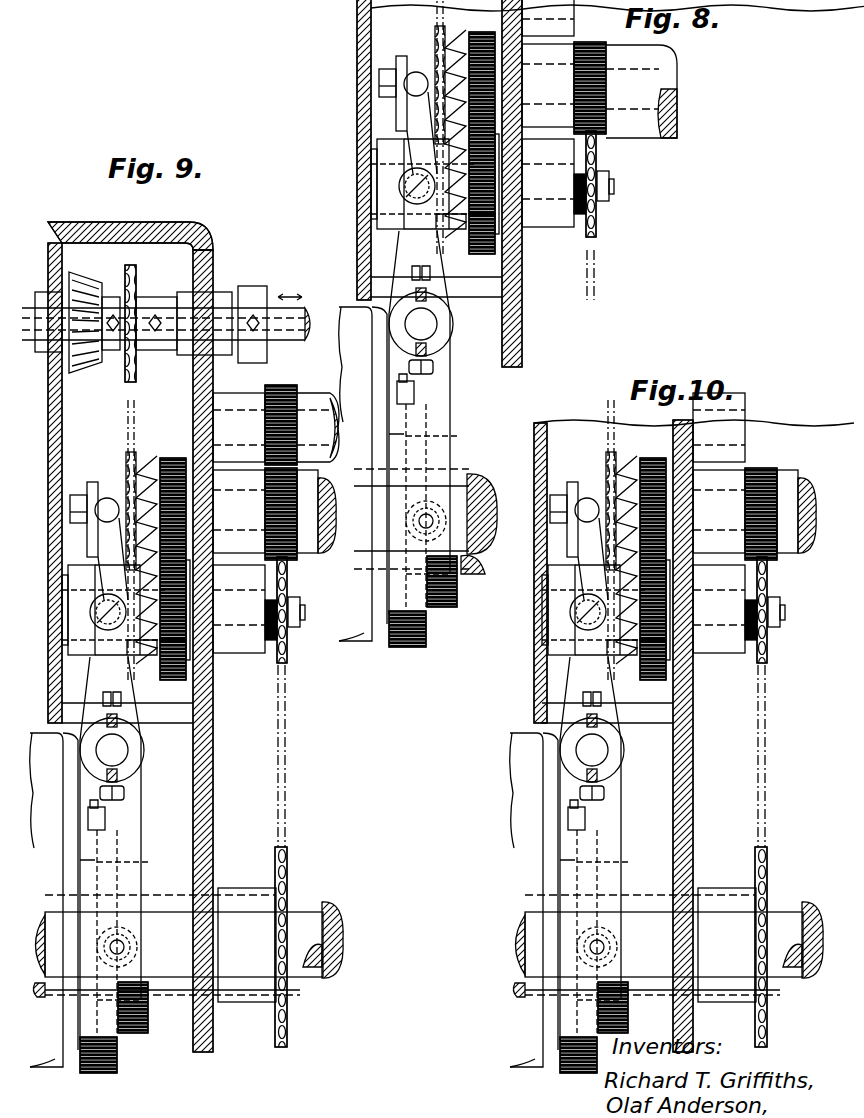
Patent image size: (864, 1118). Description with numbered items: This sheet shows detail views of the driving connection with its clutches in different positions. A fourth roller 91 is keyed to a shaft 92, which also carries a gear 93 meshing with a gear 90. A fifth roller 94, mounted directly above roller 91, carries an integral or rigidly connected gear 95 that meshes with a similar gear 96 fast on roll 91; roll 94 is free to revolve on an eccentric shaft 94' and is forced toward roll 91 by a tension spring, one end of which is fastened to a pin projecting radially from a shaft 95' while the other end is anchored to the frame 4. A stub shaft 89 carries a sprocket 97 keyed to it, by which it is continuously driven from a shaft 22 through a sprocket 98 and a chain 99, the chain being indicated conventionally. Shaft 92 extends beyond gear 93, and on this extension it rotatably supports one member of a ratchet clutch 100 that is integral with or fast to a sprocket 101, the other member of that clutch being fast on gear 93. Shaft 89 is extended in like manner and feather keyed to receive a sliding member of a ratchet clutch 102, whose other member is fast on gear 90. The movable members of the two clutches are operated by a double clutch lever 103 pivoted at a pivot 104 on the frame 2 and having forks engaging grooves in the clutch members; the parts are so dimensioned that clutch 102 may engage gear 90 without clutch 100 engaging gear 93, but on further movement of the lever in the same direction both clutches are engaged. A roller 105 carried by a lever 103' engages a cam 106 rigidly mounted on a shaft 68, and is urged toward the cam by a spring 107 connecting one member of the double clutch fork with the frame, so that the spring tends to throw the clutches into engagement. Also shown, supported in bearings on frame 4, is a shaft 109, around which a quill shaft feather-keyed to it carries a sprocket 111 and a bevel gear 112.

In FIG. 9, the frame 2 is at (68, 806).
In FIG. 8, the frame 2 is at (357, 461).
In FIG. 10, the frame 2 is at (534, 900).
In FIG. 9, the frame 4 is at (212, 790).
In FIG. 8, the frame 4 is at (451, 183).
In FIG. 10, the frame 4 is at (627, 736).
In FIG. 9, the shaft 22 is at (308, 956).
In FIG. 8, the shaft 22 is at (425, 505).
In FIG. 10, the shaft 22 is at (658, 923).
In FIG. 9, the shaft 68 is at (342, 915).
In FIG. 8, the shaft 68 is at (487, 575).
In FIG. 10, the shaft 68 is at (800, 926).
In FIG. 9, the stub shaft 89 is at (300, 615).
In FIG. 8, the stub shaft 89 is at (621, 193).
In FIG. 10, the stub shaft 89 is at (789, 614).
In FIG. 9, the gear 90 is at (186, 668).
In FIG. 8, the gear 90 is at (526, 200).
In FIG. 10, the gear 90 is at (698, 629).
In FIG. 9, the fourth roller 91 is at (312, 500).
In FIG. 8, the fourth roller 91 is at (641, 91).
In FIG. 10, the fourth roller 91 is at (796, 511).
In FIG. 9, the shaft 92 is at (75, 495).
In FIG. 8, the shaft 92 is at (519, 88).
In FIG. 10, the shaft 92 is at (574, 492).
In FIG. 9, the gear 93 is at (170, 455).
In FIG. 8, the gear 93 is at (512, 122).
In FIG. 10, the gear 93 is at (684, 543).
In FIG. 9, the fifth roller 94 is at (318, 415).
In FIG. 9, the eccentric shaft 94' is at (271, 523).
In FIG. 8, the eccentric shaft 94' is at (548, 113).
In FIG. 10, the eccentric shaft 94' is at (719, 523).
In FIG. 9, the gear 95 is at (281, 416).
In FIG. 9, the shaft 95' is at (242, 393).
In FIG. 9, the gear 96 is at (292, 565).
In FIG. 8, the gear 96 is at (611, 105).
In FIG. 10, the gear 96 is at (768, 501).
In FIG. 9, the sprocket 97 is at (286, 650).
In FIG. 8, the sprocket 97 is at (606, 193).
In FIG. 10, the sprocket 97 is at (773, 617).
In FIG. 9, the sprocket 98 is at (288, 870).
In FIG. 10, the sprocket 98 is at (779, 929).
In FIG. 9, the chain 99 is at (286, 768).
In FIG. 8, the chain 99 is at (609, 277).
In FIG. 10, the chain 99 is at (779, 756).
In FIG. 9, the ratchet clutch 100 is at (148, 478).
In FIG. 8, the ratchet clutch 100 is at (460, 125).
In FIG. 10, the ratchet clutch 100 is at (644, 548).
In FIG. 9, the sprocket 101 is at (124, 474).
In FIG. 8, the sprocket 101 is at (414, 127).
In FIG. 10, the sprocket 101 is at (611, 540).
In FIG. 9, the ratchet clutch 102 is at (170, 675).
In FIG. 8, the ratchet clutch 102 is at (478, 249).
In FIG. 10, the ratchet clutch 102 is at (653, 672).
In FIG. 9, the double clutch lever 103 is at (93, 541).
In FIG. 8, the double clutch lever 103 is at (377, 115).
In FIG. 10, the double clutch lever 103 is at (580, 541).
In FIG. 9, the lever 103' is at (136, 848).
In FIG. 8, the lever 103' is at (454, 422).
In FIG. 10, the lever 103' is at (618, 848).
In FIG. 9, the pivot 104 is at (115, 750).
In FIG. 8, the pivot 104 is at (444, 320).
In FIG. 10, the pivot 104 is at (620, 746).
In FIG. 9, the roller 105 is at (126, 947).
In FIG. 8, the roller 105 is at (452, 566).
In FIG. 10, the roller 105 is at (628, 980).
In FIG. 9, the cam 106 is at (112, 1045).
In FIG. 8, the cam 106 is at (414, 647).
In FIG. 10, the cam 106 is at (558, 1063).
In FIG. 9, the spring 107 is at (113, 599).
In FIG. 8, the spring 107 is at (396, 184).
In FIG. 10, the spring 107 is at (593, 600).
In FIG. 9, the shaft 109 is at (290, 330).
In FIG. 9, the sprocket 111 is at (136, 276).
In FIG. 9, the bevel gear 112 is at (86, 282).